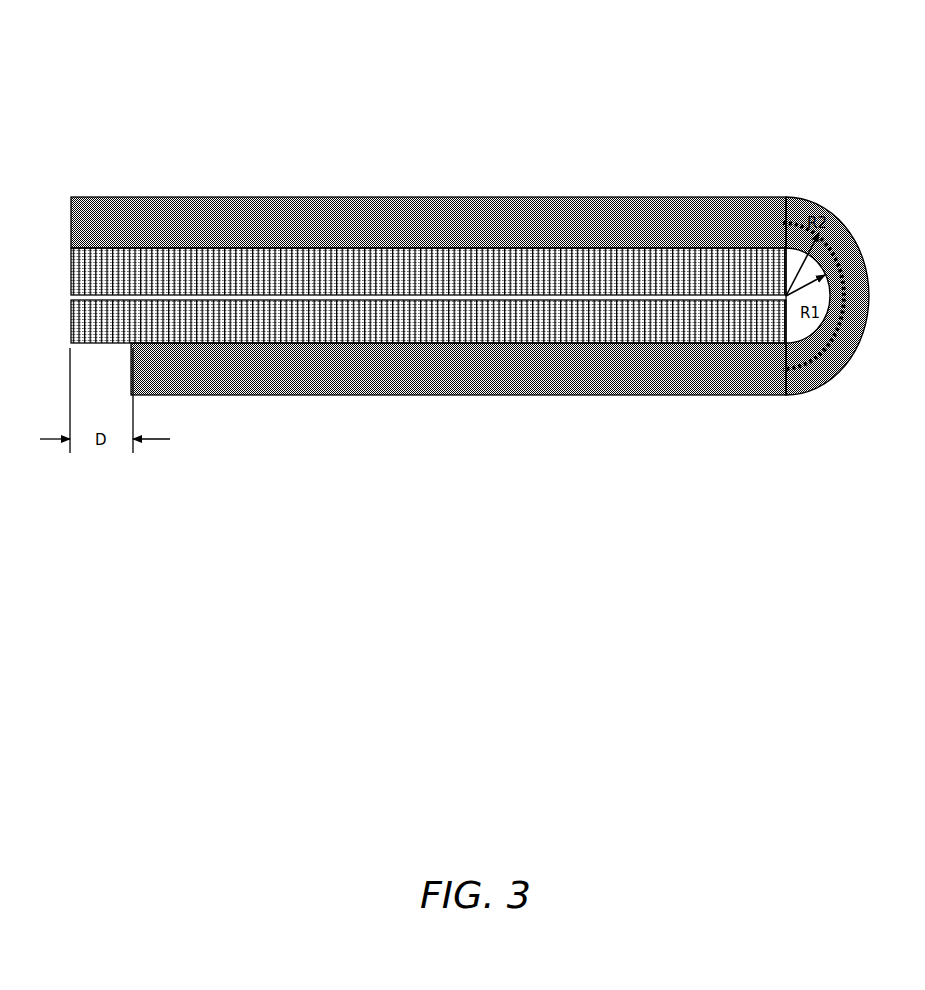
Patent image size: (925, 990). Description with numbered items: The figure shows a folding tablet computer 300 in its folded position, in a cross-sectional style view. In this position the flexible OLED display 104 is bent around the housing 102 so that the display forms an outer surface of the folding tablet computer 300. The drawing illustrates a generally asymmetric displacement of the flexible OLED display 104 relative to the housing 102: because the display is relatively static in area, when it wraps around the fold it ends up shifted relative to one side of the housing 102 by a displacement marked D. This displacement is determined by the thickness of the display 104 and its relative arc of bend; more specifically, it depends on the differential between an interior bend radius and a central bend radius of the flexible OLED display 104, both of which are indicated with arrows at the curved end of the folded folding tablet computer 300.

The folding tablet computer 300 is at (338, 105).
The housing 102 is at (71, 272).
The flexible OLED display 104 is at (627, 227).